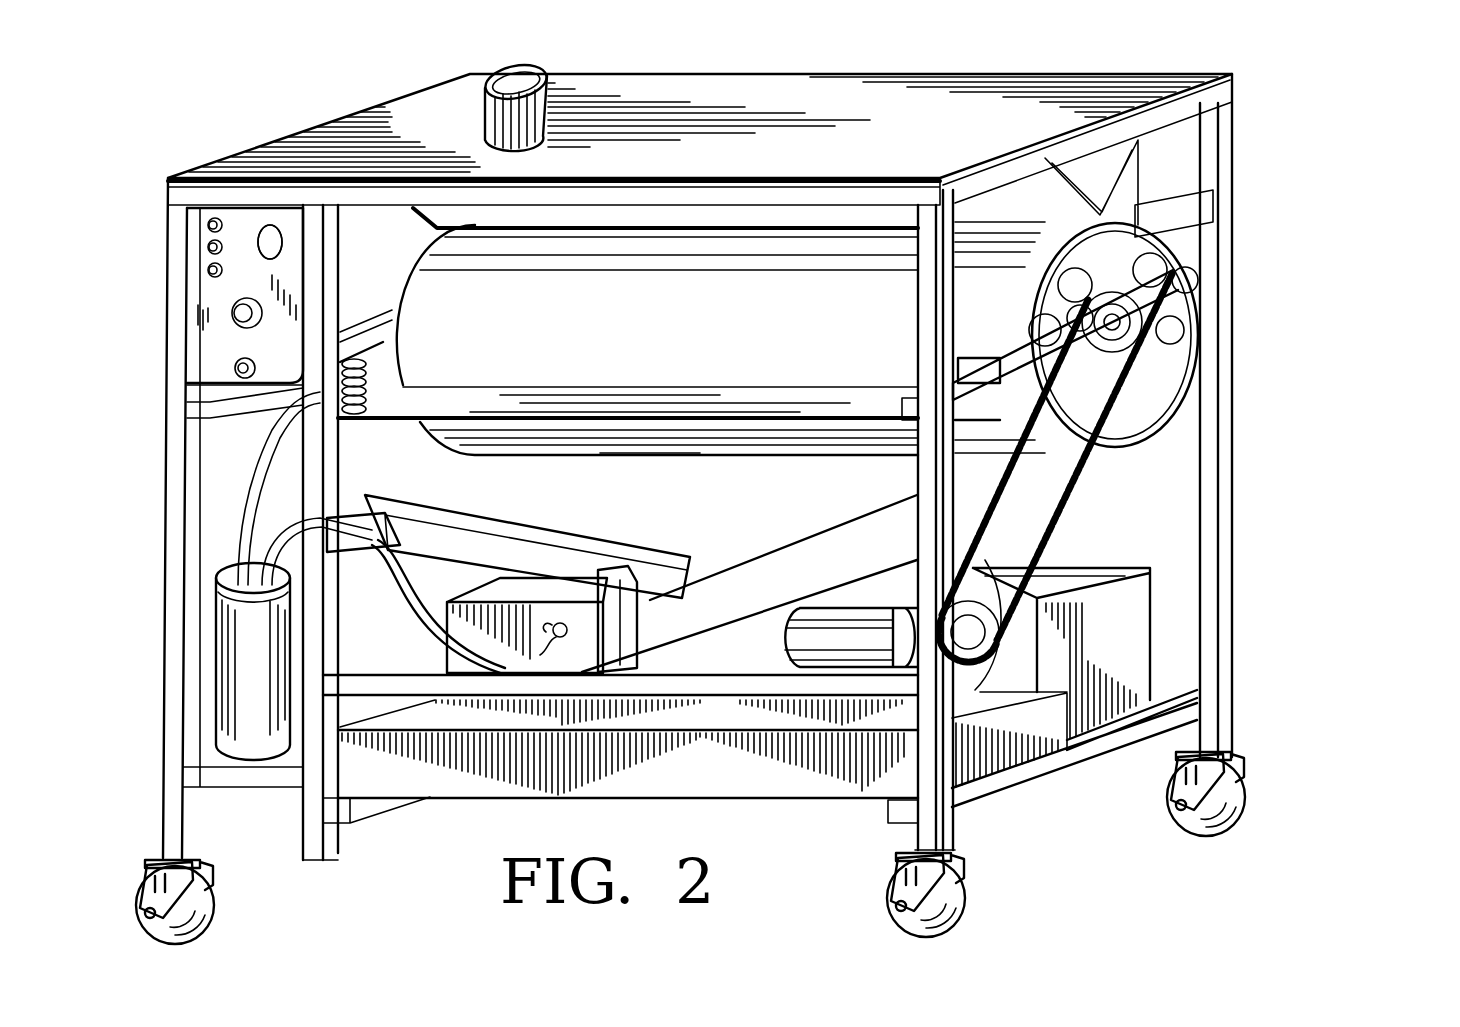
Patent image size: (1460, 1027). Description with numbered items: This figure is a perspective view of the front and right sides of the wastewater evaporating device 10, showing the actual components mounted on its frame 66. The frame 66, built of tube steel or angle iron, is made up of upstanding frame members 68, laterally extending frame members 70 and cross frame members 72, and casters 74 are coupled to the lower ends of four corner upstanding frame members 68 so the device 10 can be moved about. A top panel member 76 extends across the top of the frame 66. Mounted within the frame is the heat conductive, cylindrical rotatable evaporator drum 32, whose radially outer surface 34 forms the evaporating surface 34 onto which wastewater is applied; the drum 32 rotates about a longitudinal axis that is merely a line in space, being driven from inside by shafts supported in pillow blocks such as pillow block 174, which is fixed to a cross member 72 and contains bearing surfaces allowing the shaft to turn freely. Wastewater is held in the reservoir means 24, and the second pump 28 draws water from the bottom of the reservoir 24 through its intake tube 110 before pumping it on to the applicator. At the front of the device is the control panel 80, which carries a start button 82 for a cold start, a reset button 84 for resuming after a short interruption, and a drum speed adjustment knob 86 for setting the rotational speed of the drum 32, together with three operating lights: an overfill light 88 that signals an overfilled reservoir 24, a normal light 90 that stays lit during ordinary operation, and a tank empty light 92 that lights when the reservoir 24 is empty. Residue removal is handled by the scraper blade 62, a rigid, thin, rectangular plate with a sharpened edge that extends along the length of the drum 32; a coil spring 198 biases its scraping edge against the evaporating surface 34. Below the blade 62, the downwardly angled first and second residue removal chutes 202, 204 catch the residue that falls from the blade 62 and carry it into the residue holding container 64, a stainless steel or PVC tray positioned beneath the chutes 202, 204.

The device 10 is at (1292, 128).
The reservoir means 24 is at (1130, 605).
The second pump 28 is at (245, 633).
The rotatable evaporator drum 32 is at (655, 460).
The radially outer surface 34 is at (656, 349).
The scraper blade 62 is at (392, 395).
The residue holding container 64 is at (603, 782).
The frame 66 is at (1252, 395).
The upstanding frame members 68 is at (917, 485).
The laterally extending frame members 70 is at (325, 178).
The cross frame members 72 is at (970, 372).
The casters 74 is at (948, 925).
The top panel member 76 is at (803, 112).
The control panel 80 is at (200, 340).
The start button 82 is at (232, 312).
The reset button 84 is at (237, 366).
The drum speed adjustment knob 86 is at (267, 224).
The overfill light 88 is at (207, 225).
The normal light 90 is at (207, 247).
The tank empty light 92 is at (207, 270).
The intake tube 110 is at (400, 610).
The pillow block 174 is at (1020, 318).
The coil spring 198 is at (384, 316).
The first residue removal chute 202 is at (483, 520).
The second residue removal chute 204 is at (848, 550).